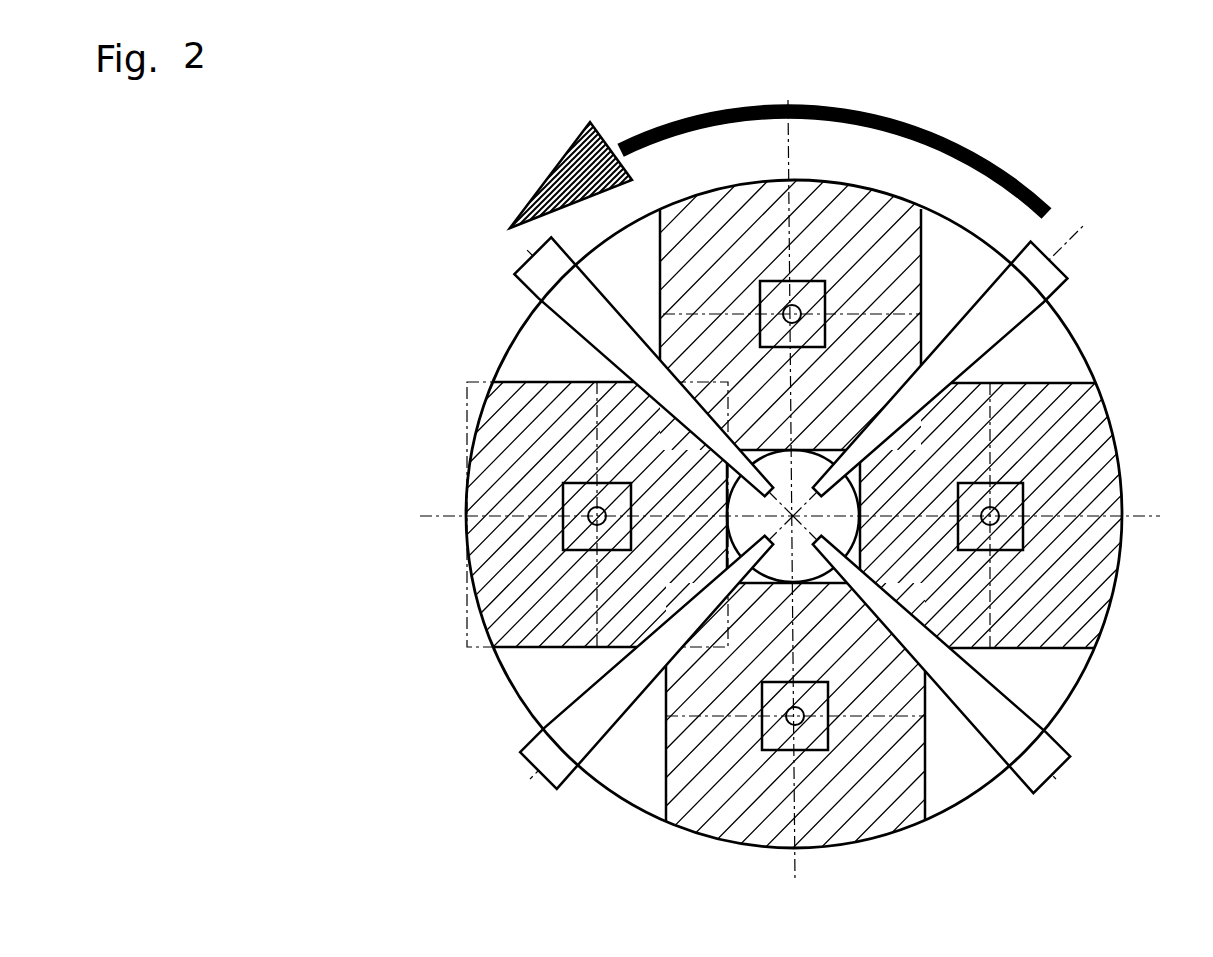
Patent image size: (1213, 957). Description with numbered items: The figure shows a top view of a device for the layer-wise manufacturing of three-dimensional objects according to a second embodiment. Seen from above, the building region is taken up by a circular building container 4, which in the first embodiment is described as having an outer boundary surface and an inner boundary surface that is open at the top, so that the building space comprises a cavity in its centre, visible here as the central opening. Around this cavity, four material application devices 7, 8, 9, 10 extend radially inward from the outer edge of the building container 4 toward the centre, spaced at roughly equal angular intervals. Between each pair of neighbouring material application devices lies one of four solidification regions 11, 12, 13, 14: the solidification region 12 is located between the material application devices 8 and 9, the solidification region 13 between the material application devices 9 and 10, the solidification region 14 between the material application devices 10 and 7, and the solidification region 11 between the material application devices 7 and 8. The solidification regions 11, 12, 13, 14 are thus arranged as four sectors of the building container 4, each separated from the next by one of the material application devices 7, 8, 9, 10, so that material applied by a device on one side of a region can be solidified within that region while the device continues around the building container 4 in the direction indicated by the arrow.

The building container 4 is at (1077, 342).
The material application device 7 is at (550, 787).
The material application device 8 is at (1042, 790).
The material application device 9 is at (1057, 260).
The material application device 10 is at (525, 263).
The solidification region 11 is at (794, 734).
The solidification region 12 is at (958, 529).
The solidification region 13 is at (794, 296).
The solidification region 14 is at (560, 499).